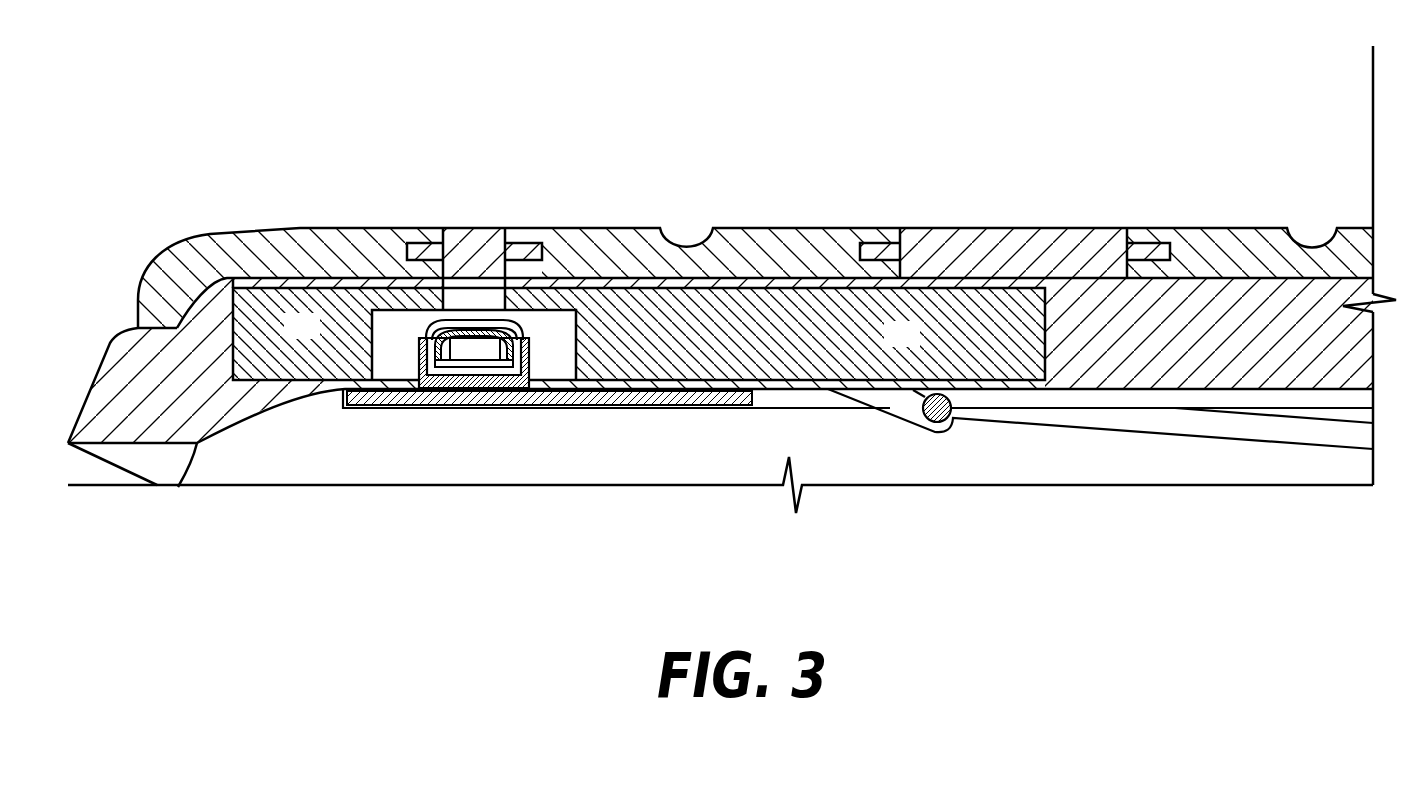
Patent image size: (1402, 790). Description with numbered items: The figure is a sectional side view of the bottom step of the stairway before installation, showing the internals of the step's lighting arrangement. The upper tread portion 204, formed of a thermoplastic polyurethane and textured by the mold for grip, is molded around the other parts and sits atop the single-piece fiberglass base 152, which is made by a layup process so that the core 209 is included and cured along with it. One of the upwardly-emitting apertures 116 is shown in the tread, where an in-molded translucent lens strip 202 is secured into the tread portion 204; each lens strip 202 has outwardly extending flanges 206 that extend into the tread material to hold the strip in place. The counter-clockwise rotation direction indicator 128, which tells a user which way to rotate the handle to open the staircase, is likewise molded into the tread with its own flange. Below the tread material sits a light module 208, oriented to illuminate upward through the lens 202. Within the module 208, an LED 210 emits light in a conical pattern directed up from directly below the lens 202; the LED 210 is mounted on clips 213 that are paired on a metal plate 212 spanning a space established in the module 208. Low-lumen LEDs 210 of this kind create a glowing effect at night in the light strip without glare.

The upwardly-emitting aperture 116 is at (514, 200).
The counter-clockwise rotation direction indicator 128 is at (1033, 238).
The fiberglass base 152 is at (137, 412).
The lens strip 202 is at (462, 240).
The tread portion 204 is at (196, 270).
The flange 206 is at (520, 253).
The light module 208 is at (499, 356).
The core 209 is at (288, 335).
The LED 210 is at (483, 348).
The metal plate 212 is at (461, 402).
The clip 213 is at (421, 348).